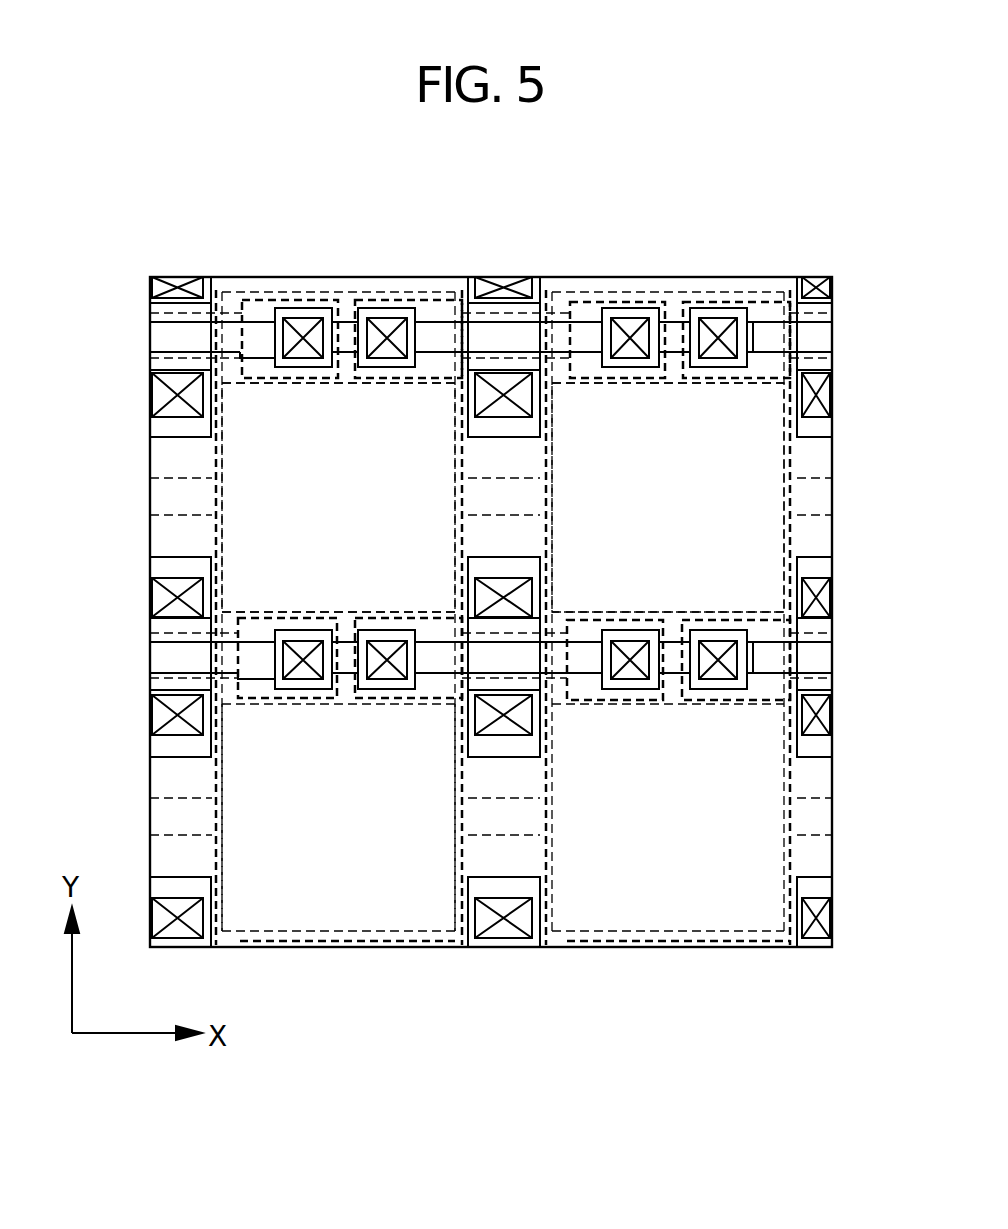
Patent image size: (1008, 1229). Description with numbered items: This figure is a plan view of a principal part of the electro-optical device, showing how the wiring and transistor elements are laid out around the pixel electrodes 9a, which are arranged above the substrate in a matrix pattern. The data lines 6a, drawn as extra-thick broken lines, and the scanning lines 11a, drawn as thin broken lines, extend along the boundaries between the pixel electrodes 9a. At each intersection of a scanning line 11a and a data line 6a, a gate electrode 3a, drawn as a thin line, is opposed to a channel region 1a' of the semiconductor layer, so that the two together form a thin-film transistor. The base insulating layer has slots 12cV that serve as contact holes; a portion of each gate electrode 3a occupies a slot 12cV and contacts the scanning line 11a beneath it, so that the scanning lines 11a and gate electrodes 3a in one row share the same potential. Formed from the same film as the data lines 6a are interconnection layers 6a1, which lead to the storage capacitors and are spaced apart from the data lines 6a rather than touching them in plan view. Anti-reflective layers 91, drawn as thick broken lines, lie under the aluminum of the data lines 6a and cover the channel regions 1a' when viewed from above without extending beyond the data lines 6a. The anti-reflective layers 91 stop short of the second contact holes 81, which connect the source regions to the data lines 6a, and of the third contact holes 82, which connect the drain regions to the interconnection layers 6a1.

The channel region 1a' is at (491, 273).
The anti-reflective layer 91 is at (537, 300).
The scanning line 11a is at (552, 436).
The second contact hole 81 is at (713, 327).
The slot 12cV is at (480, 398).
The data line 6a is at (460, 493).
The pixel electrode 9a is at (763, 497).
The gate electrode 3a is at (502, 757).
The interconnection layer 6a1 is at (590, 700).
The third contact hole 82 is at (632, 677).